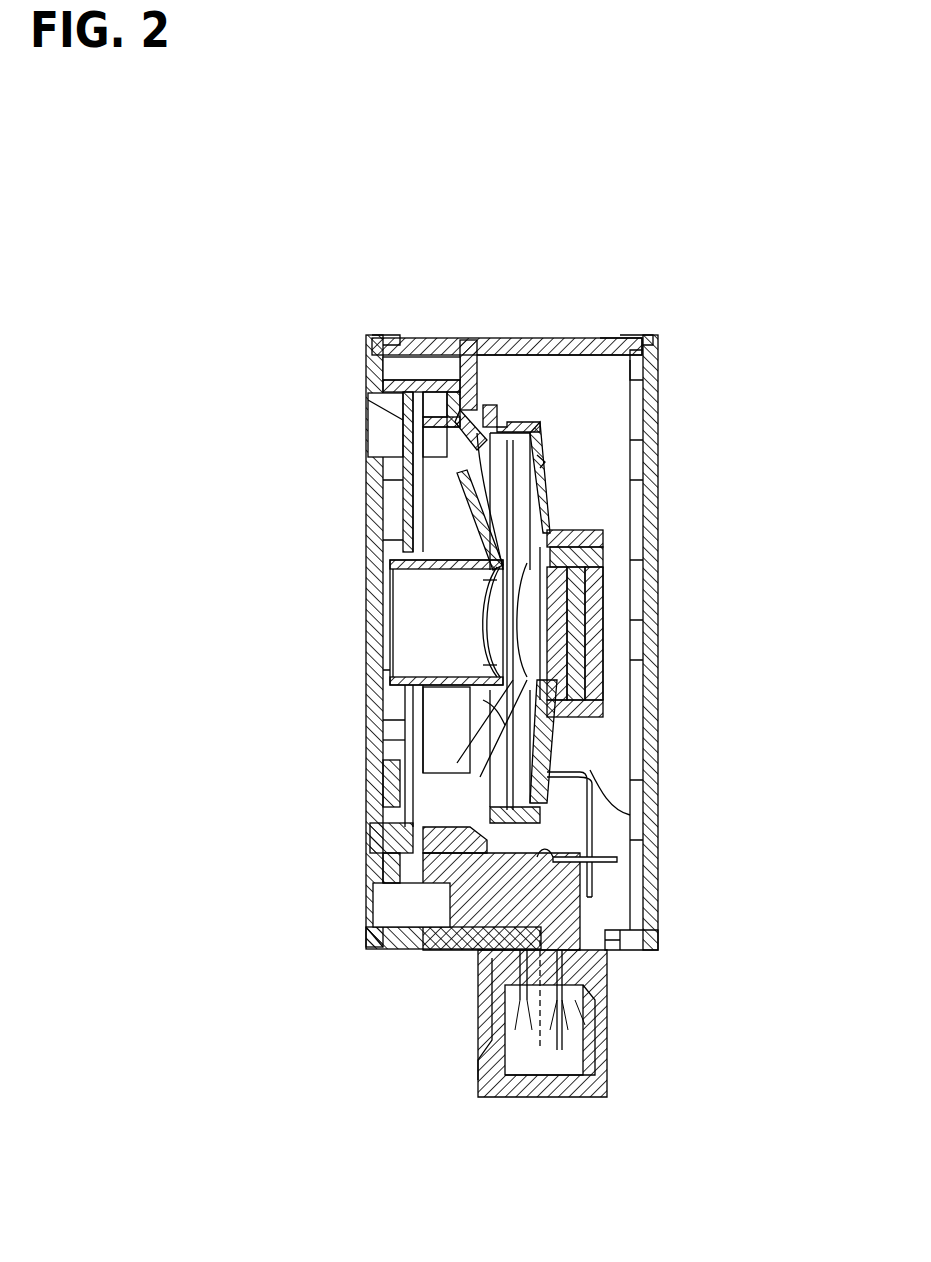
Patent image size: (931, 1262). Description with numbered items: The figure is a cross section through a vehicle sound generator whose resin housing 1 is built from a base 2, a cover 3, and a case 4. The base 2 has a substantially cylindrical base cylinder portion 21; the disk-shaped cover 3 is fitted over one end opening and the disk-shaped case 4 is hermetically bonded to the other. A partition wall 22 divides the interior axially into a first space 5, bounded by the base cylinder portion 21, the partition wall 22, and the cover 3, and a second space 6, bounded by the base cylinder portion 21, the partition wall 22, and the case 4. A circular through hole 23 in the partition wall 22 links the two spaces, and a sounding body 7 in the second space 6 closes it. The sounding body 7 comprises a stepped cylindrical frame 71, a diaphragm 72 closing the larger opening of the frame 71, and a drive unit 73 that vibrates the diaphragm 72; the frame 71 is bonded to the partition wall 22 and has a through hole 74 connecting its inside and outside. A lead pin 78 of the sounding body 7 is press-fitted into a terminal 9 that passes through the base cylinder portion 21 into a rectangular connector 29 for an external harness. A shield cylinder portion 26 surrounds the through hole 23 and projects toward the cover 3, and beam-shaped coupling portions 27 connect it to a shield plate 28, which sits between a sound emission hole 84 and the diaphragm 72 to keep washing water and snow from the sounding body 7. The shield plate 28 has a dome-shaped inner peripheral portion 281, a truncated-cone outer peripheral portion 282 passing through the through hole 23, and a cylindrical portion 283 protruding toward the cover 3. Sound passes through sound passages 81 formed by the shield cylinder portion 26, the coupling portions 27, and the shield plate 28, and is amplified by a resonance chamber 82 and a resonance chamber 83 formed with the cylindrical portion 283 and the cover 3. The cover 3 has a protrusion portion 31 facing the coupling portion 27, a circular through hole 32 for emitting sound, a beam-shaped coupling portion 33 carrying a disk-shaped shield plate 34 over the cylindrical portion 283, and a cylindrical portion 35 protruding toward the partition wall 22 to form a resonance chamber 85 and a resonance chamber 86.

The housing 1 is at (660, 335).
The base 2 is at (560, 338).
The cover 3 is at (360, 345).
The case 4 is at (650, 390).
The first space 5 is at (470, 532).
The second space 6 is at (600, 495).
The sounding body 7 is at (590, 530).
The terminal 9 is at (565, 1045).
The base cylinder portion 21 is at (598, 350).
The partition wall 22 is at (500, 360).
The through hole 23 is at (595, 860).
The shield cylinder portion 26 is at (440, 430).
The coupling portion 27 is at (430, 452).
The shield plate 28 is at (470, 556).
The connector 29 is at (590, 1002).
The protrusion portion 31 is at (400, 795).
The through hole 32 is at (400, 770).
The coupling portion 33 is at (392, 725).
The shield plate 34 is at (392, 680).
The cylindrical portion 35 is at (400, 905).
The frame 71 is at (600, 548).
The diaphragm 72 is at (560, 615).
The drive unit 73 is at (605, 642).
The through hole 74 is at (560, 470).
The lead pin 78 is at (590, 780).
The sound passage 81 is at (445, 865).
The resonance chamber 82 is at (430, 740).
The resonance chamber 83 is at (440, 620).
The sound emission hole 84 is at (400, 492).
The resonance chamber 85 is at (390, 930).
The resonance chamber 86 is at (420, 880).
The inner peripheral portion 281 is at (470, 598).
The outer peripheral portion 282 is at (470, 705).
The cylindrical portion 283 is at (470, 648).